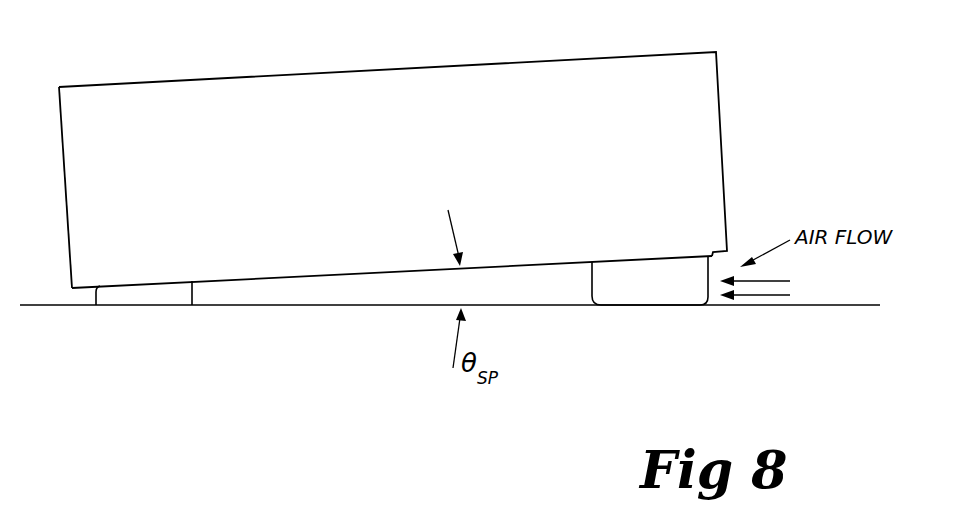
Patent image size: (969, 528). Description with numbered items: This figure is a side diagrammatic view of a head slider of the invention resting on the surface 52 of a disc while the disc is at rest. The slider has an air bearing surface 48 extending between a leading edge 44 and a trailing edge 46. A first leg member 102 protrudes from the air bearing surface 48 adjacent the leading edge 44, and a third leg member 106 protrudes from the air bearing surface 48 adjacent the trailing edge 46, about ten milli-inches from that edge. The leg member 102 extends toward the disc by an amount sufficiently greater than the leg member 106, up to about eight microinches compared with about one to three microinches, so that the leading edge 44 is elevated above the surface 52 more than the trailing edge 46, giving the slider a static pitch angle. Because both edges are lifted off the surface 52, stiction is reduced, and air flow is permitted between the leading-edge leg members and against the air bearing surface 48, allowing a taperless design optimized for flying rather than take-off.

The leading edge 44 is at (724, 153).
The trailing edge 46 is at (63, 160).
The air bearing surface 48 is at (370, 270).
The surface of the disc 52 is at (835, 306).
The first leg member 102 is at (592, 280).
The third leg member 106 is at (92, 292).